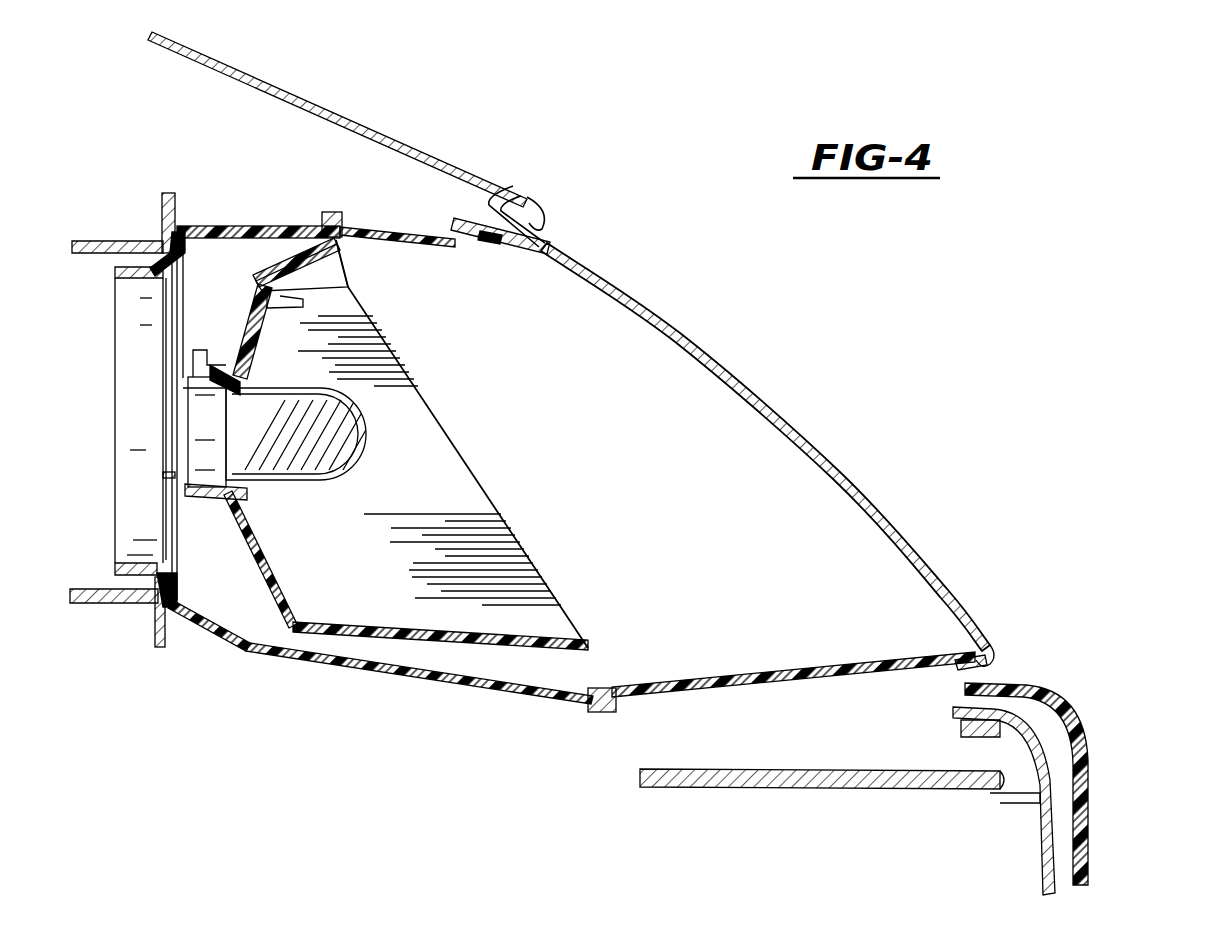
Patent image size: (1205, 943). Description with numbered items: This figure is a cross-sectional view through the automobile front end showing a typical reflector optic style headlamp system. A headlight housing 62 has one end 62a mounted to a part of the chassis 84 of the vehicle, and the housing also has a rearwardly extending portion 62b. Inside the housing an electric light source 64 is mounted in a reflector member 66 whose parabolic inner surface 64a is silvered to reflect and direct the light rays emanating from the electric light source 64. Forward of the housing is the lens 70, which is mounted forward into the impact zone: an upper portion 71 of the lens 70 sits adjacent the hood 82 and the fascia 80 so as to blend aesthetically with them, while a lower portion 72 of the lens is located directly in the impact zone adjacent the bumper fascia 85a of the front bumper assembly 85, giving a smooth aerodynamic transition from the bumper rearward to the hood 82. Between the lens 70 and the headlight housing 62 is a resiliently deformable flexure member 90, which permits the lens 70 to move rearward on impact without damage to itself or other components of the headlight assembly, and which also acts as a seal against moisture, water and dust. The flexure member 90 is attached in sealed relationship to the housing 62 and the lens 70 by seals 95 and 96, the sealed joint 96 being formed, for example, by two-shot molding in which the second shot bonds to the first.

The headlight housing 62 is at (197, 213).
The one end of the headlight housing 62a is at (140, 280).
The rearwardly extending portion 62b is at (376, 692).
The electric light source 64 is at (372, 440).
The parabolic inner surface 64a is at (266, 333).
The reflector member 66 is at (327, 618).
The lens 70 is at (797, 433).
The upper portion of the lens 71 is at (555, 243).
The lower portion of the lens 72 is at (997, 657).
The fascia 80 is at (547, 238).
The hood 82 is at (352, 120).
The chassis 84 is at (97, 246).
The front bumper assembly 85 is at (1067, 703).
The bumper fascia 85a is at (1092, 790).
The flexure member 90 is at (388, 222).
The seal 95 is at (322, 212).
The seal 96 is at (488, 242).